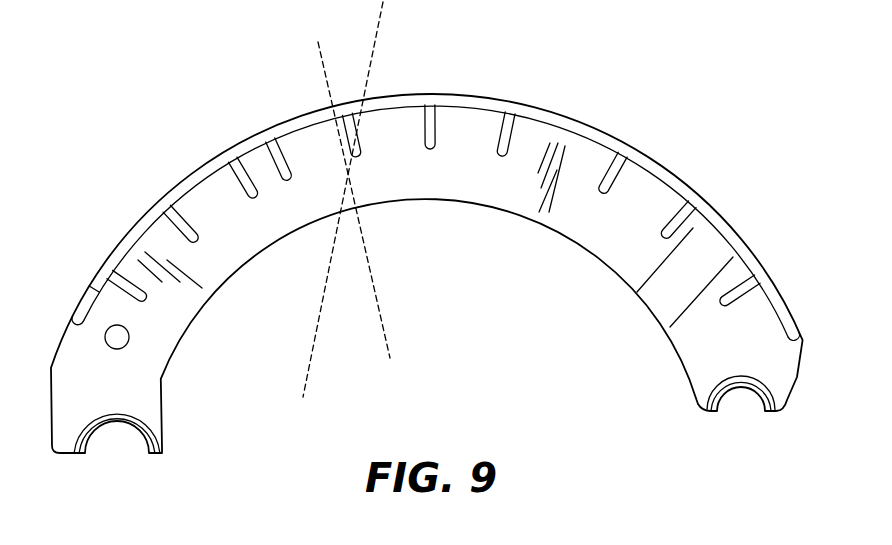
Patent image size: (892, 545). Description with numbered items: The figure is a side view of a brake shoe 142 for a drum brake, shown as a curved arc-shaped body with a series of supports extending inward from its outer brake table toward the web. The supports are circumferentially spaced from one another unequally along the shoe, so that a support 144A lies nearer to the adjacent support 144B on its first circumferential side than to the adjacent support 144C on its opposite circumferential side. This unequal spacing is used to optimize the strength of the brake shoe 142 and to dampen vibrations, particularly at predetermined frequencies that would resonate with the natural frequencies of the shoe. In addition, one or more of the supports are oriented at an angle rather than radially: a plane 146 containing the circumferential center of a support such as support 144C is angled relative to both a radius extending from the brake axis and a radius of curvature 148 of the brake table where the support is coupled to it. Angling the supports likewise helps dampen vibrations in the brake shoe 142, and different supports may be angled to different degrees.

The brake shoe 142 is at (427, 255).
The support 144A is at (277, 140).
The support 144B is at (243, 197).
The support 144C is at (351, 130).
The plane 146 is at (379, 27).
The radius of curvature 148 is at (387, 341).